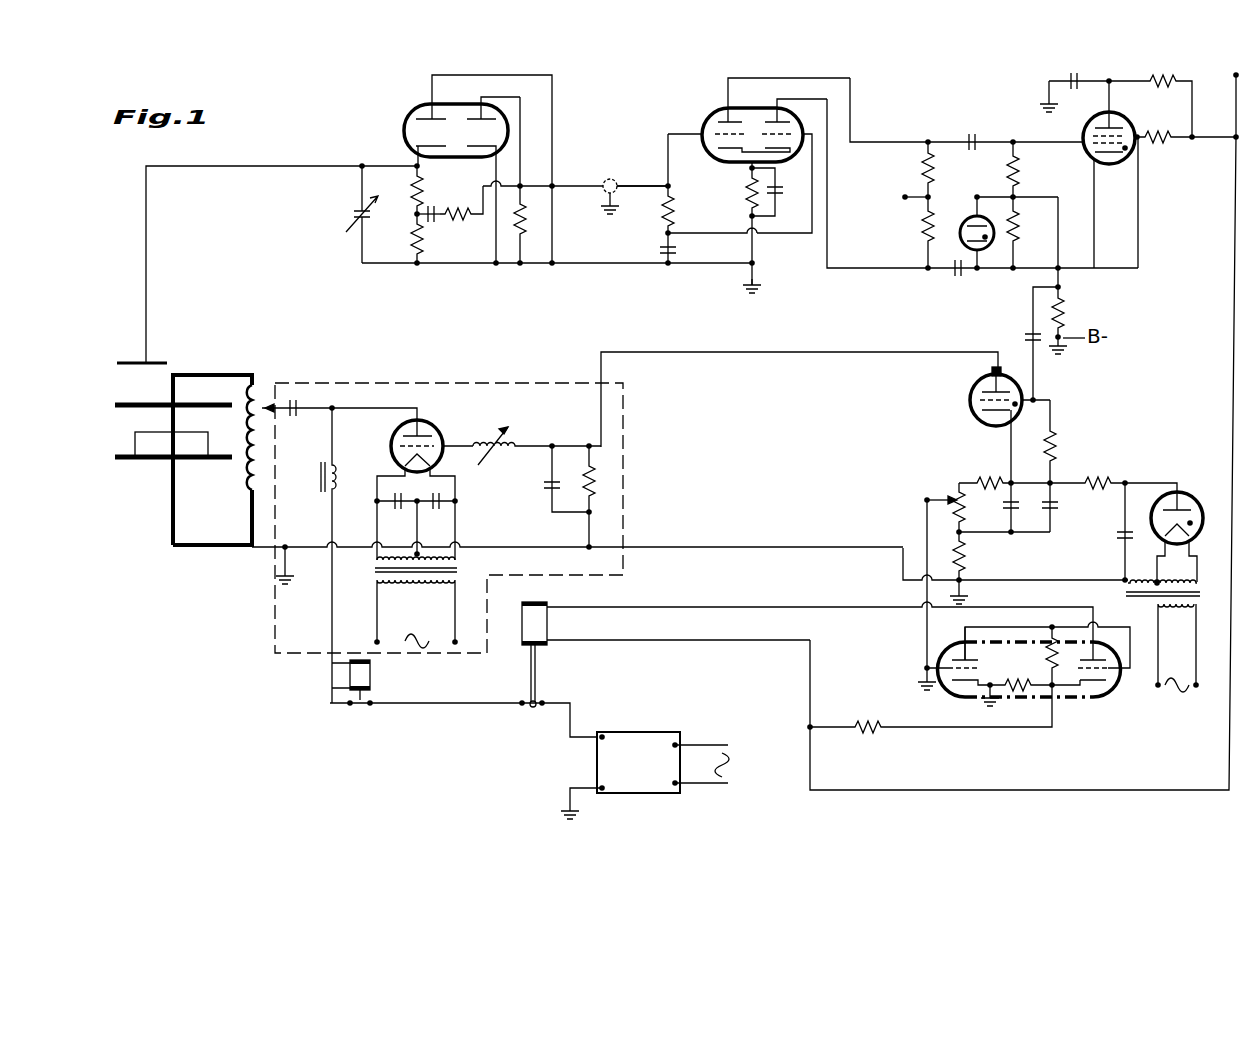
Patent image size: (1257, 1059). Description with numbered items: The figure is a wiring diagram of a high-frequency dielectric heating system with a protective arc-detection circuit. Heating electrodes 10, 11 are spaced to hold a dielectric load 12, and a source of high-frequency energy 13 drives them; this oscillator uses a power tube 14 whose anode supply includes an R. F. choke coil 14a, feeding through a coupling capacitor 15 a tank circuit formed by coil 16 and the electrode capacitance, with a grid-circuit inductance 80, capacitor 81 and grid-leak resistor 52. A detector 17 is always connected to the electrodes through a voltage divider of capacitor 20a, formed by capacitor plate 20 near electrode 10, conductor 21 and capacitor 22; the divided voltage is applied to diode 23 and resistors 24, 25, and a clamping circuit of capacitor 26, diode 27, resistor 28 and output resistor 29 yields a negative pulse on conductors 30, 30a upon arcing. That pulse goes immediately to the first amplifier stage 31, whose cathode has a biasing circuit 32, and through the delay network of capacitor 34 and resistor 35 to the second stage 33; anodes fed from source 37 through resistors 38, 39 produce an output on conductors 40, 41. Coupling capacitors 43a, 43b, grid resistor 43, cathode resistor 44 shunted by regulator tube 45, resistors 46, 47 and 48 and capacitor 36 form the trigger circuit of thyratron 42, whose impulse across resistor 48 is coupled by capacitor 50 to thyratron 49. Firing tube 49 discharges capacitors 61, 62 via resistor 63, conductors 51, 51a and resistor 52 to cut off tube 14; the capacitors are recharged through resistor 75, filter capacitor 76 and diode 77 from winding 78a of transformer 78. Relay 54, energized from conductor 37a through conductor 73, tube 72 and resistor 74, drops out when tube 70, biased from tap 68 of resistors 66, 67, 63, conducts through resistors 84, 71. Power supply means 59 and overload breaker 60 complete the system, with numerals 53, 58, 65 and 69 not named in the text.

The heating electrode 10 is at (115, 403).
The heating electrode 11 is at (140, 460).
The load 12 is at (135, 445).
The source of high-frequency energy 13 is at (420, 383).
The power tube 14 is at (440, 425).
The R. F. choke coil 14a is at (352, 452).
The coupling capacitor 15 is at (293, 418).
The inductance element or coil 16 is at (245, 470).
The detector or sensing means 17 is at (407, 77).
The capacitor plate 20 is at (150, 362).
The capacitor 20a is at (118, 383).
The conductor 21 is at (150, 230).
The capacitor 22 is at (355, 207).
The diode 23 is at (410, 126).
The voltage-dividing resistor 24 is at (425, 184).
The voltage-dividing resistor 25 is at (410, 233).
The capacitor 26 is at (431, 234).
The diode 27 is at (497, 128).
The resistor 28 is at (461, 219).
The output resistor 29 is at (527, 217).
The shielded conductor 30 is at (650, 185).
The ground-conductor 30a is at (603, 266).
The first stage of the amplifier 31 is at (707, 115).
The grid-cathode biasing circuit 32 is at (745, 189).
The second amplifying stage 33 is at (797, 128).
The capacitor 34 is at (678, 251).
The resistor 35 is at (676, 210).
The capacitor 36 is at (1078, 84).
The source of anode potential 37 is at (905, 200).
The conductor 37a is at (1232, 226).
The resistor 38 is at (933, 171).
The resistor 39 is at (925, 236).
The output conductor 40 is at (897, 141).
The output conductor 41 is at (860, 270).
The first thyratron 42 is at (1125, 156).
The grid resistor 43 is at (1020, 170).
The coupling capacitor 43a is at (972, 134).
The coupling capacitor 43b is at (955, 275).
The cathode-biasing resistor 44 is at (1020, 226).
The regulator type of tube 45 is at (963, 225).
The resistor 46 is at (1170, 94).
The resistor 47 is at (1155, 133).
The resistor 48 is at (1065, 311).
The second control tube 49 is at (975, 396).
The coupling capacitor 50 is at (1025, 335).
The conductor 51 is at (797, 352).
The conductor 51a is at (838, 550).
The grid resistor 52 is at (600, 485).
The filament transformer 53 is at (457, 569).
The relay or contactor 54 is at (530, 682).
The lead 58 is at (455, 705).
The supply means 59 is at (655, 738).
The overload relay or circuit breaker 60 is at (358, 705).
The capacitor 61 is at (1000, 513).
The capacitor 62 is at (1053, 513).
The resistor 63 is at (965, 561).
The lead 65 is at (540, 546).
The resistor 66 is at (987, 479).
The resistor 67 is at (957, 490).
The tap 68 is at (925, 498).
The lead 69 is at (925, 636).
The tube 70 is at (952, 648).
The resistor 71 is at (1048, 660).
The tube or amplifying stage 72 is at (1115, 678).
The conductor 73 is at (690, 606).
The resistor 74 is at (1015, 690).
The series-resistor 75 is at (1093, 480).
The filtering capacitor 76 is at (1117, 535).
The rectifier or diode 77 is at (1185, 493).
The transformer 78 is at (1199, 596).
The anode supply winding 78a is at (1128, 587).
The inductance 80 is at (512, 440).
The capacitor 81 is at (540, 485).
The resistor 84 is at (870, 722).